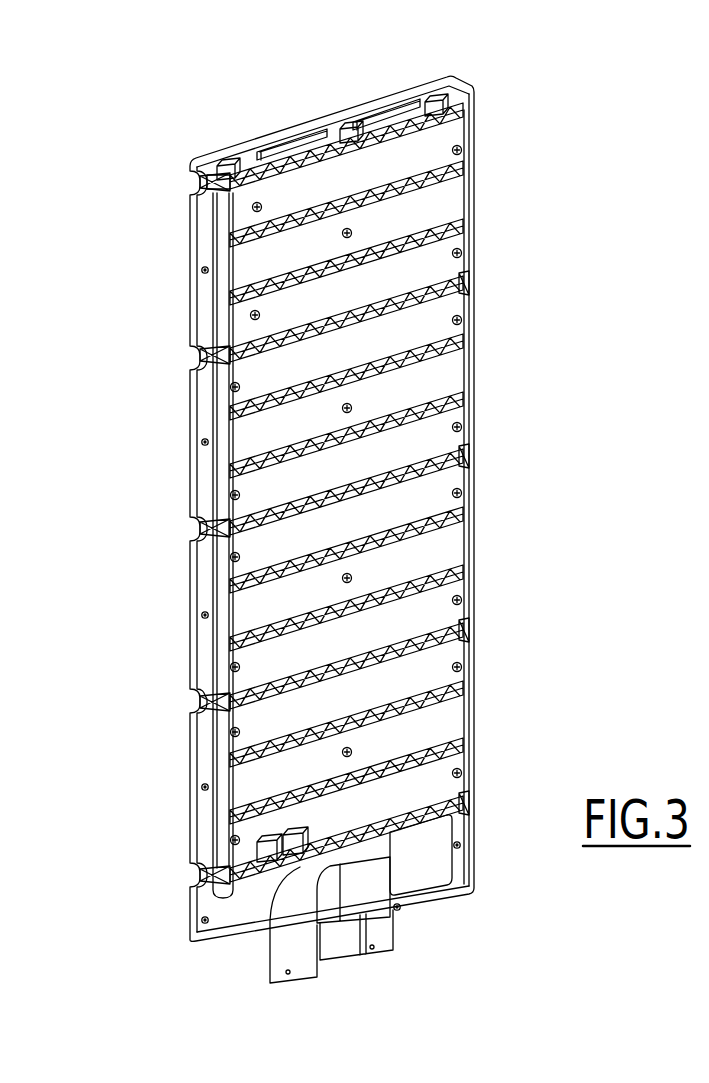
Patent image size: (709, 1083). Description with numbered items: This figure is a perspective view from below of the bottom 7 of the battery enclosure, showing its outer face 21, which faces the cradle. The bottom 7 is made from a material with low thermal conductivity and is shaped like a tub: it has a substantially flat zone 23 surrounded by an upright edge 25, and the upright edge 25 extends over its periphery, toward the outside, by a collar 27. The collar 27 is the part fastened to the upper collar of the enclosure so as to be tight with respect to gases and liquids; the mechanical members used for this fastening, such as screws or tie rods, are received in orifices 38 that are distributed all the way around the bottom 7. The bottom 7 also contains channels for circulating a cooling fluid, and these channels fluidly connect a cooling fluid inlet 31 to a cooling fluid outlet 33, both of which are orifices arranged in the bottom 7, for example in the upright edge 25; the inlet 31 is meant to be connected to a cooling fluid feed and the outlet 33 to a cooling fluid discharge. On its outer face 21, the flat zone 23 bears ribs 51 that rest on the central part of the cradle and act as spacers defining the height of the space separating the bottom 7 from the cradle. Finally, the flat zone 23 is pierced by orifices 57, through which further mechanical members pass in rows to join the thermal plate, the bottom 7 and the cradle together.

The bottom 7 is at (215, 137).
The outer face 21 is at (373, 283).
The substantially flat zone 23 is at (410, 385).
The upright edge 25 is at (227, 386).
The collar 27 is at (208, 476).
The cooling fluid inlet 31 is at (273, 933).
The cooling fluid outlet 33 is at (312, 880).
The orifices 38 is at (240, 145).
The ribs 51 is at (470, 690).
The orifices 57 is at (250, 210).